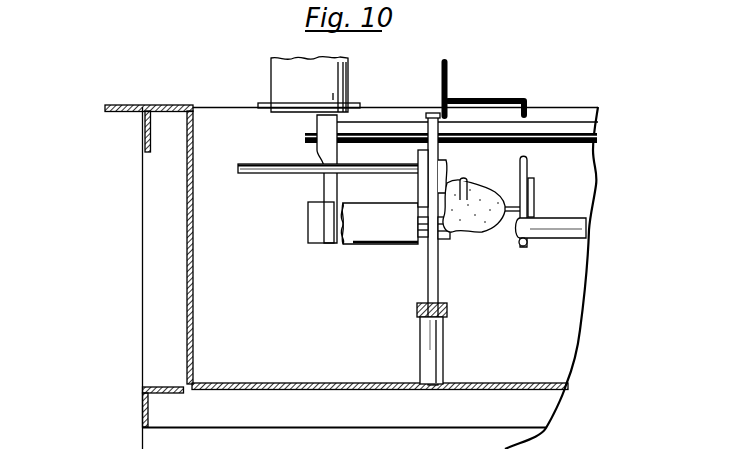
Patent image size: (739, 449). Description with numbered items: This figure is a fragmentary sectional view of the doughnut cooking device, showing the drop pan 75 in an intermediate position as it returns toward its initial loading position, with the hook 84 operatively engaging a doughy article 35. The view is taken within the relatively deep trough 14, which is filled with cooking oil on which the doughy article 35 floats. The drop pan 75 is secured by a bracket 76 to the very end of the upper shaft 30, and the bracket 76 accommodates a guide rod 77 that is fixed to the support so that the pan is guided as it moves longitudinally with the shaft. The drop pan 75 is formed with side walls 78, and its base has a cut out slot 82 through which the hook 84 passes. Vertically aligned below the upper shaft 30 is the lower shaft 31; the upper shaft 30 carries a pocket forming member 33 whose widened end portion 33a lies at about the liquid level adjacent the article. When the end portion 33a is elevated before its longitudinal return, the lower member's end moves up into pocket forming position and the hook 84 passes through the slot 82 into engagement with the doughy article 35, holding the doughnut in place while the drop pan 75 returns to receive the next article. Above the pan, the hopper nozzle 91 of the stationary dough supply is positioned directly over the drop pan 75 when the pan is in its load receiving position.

The trough 14 is at (187, 315).
The upper shaft 30 is at (568, 128).
The lower shaft 31 is at (573, 240).
The pocket forming member 33 is at (502, 100).
The widened end portion 33a is at (451, 73).
The doughy article 35 is at (480, 233).
The drop pan 75 is at (316, 240).
The bracket 76 is at (331, 135).
The guide rod 77 is at (252, 172).
The side wall 78 is at (344, 208).
The slot 82 is at (382, 245).
The hook 84 is at (526, 201).
The hopper nozzle 91 is at (272, 73).